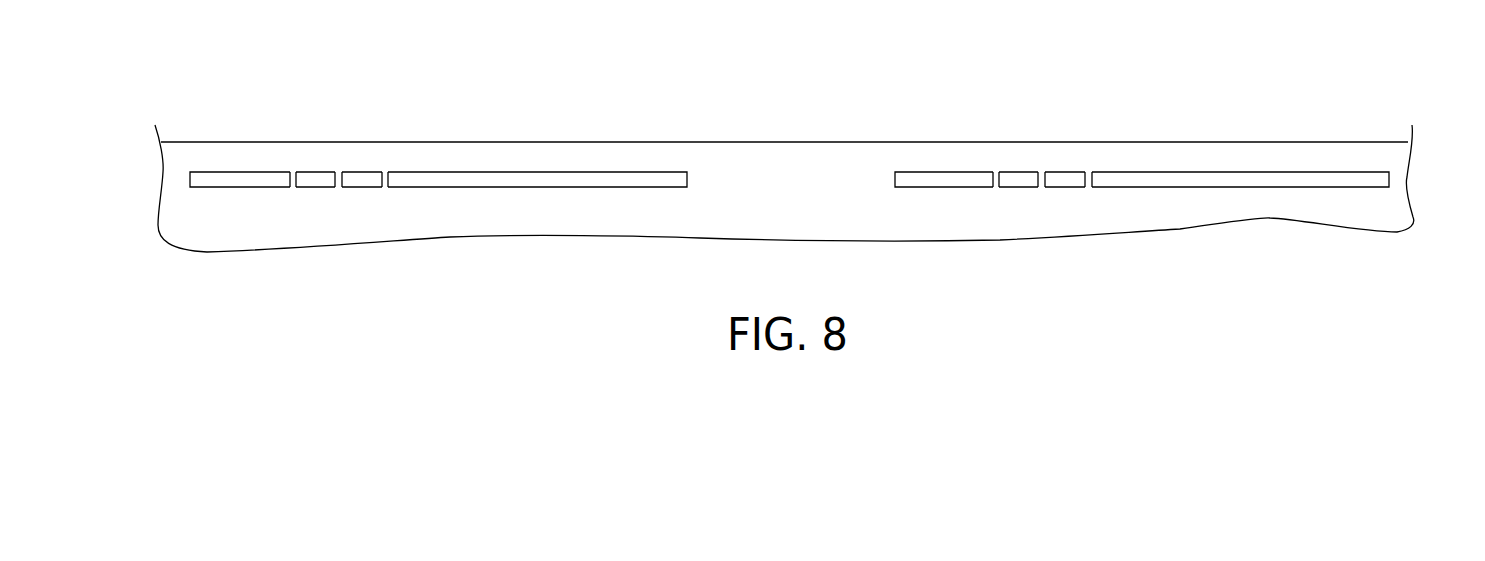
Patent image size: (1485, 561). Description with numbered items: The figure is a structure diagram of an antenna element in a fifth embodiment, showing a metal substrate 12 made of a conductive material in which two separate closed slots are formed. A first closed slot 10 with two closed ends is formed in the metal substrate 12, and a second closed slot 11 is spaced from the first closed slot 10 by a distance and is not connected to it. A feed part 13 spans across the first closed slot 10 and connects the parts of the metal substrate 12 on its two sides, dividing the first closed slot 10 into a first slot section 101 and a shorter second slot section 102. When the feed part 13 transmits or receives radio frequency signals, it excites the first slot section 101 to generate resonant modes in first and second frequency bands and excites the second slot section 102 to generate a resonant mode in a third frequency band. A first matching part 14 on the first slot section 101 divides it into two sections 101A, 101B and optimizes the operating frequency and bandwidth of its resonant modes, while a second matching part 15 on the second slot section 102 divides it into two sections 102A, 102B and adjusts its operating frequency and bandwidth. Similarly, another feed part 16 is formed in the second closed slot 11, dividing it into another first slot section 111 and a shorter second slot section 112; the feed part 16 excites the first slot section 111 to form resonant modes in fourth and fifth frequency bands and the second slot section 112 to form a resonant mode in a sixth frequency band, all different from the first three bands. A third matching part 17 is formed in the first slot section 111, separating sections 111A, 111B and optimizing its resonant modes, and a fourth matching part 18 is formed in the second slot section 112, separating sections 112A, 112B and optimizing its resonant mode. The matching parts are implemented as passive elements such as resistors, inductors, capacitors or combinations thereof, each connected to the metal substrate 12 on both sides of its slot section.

The first closed slot 10 is at (1160, 51).
The second closed slot 11 is at (457, 51).
The metal substrate 12 is at (781, 160).
The feed part 13 is at (1045, 187).
The first matching part 14 is at (1092, 187).
The second matching part 15 is at (998, 187).
The feed part 16 is at (342, 187).
The third matching part 17 is at (387, 187).
The fourth matching part 18 is at (297, 187).
The first slot section 101 is at (1208, 90).
The second slot section 102 is at (1055, 90).
The first slot section 111 is at (505, 90).
The second slot section 112 is at (350, 90).
The section 101A is at (1072, 178).
The section 101B is at (1173, 178).
The section 102A is at (942, 178).
The section 102B is at (1018, 178).
The section 111A is at (367, 178).
The section 111B is at (470, 178).
The section 112A is at (238, 178).
The section 112B is at (313, 178).